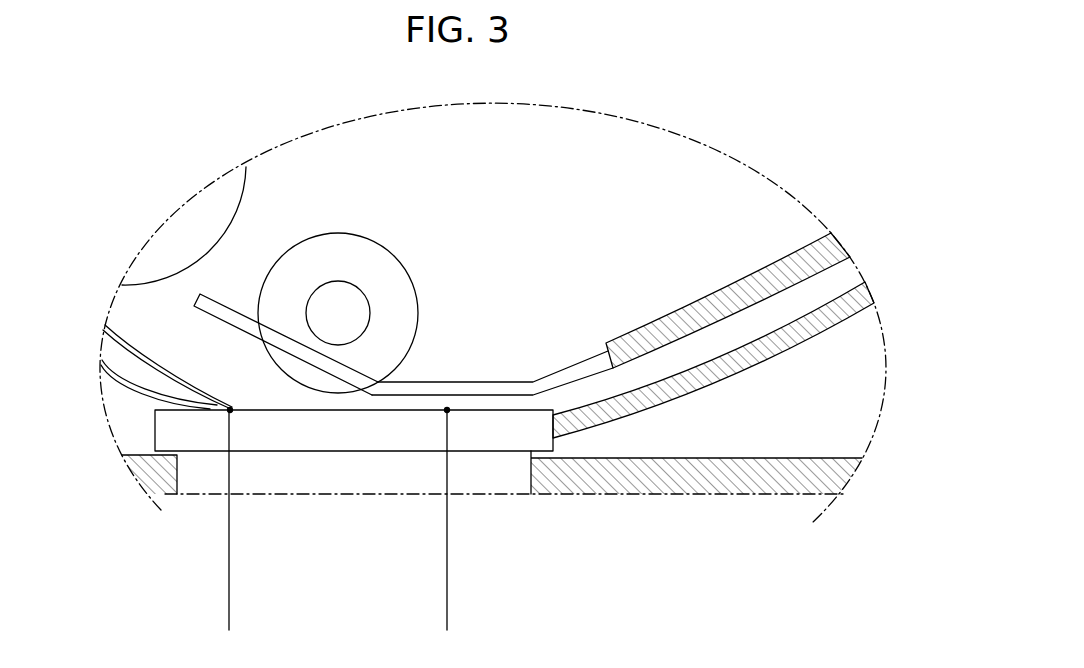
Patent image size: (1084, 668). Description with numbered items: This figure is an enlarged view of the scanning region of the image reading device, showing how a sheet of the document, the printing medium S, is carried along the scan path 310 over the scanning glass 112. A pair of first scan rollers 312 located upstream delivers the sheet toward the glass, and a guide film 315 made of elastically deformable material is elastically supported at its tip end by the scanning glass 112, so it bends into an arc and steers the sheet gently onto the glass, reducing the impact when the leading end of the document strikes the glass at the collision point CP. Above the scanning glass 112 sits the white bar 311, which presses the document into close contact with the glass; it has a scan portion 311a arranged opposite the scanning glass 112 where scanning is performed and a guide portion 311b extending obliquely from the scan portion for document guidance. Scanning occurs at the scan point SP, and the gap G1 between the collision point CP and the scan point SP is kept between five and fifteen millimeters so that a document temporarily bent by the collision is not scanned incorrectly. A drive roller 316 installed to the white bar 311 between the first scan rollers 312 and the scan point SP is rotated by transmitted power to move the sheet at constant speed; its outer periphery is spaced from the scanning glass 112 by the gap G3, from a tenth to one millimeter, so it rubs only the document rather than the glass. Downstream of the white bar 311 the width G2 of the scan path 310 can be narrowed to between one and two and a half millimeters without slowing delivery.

The scanning glass 112 is at (170, 553).
The scan path 310 is at (741, 336).
The white bar 311 is at (547, 257).
The scan portion 311a is at (500, 382).
The guide portion 311b is at (357, 377).
The first scan rollers 312 is at (185, 243).
The guide film 315 is at (130, 382).
The drive roller 316 is at (367, 250).
The printing medium S is at (127, 338).
The collision point CP is at (258, 518).
The scan point SP is at (492, 522).
The gap between collision point and scan point G1 is at (229, 625).
The width of the scan path G2 is at (628, 270).
The gap between drive roller and scanning glass G3 is at (338, 563).